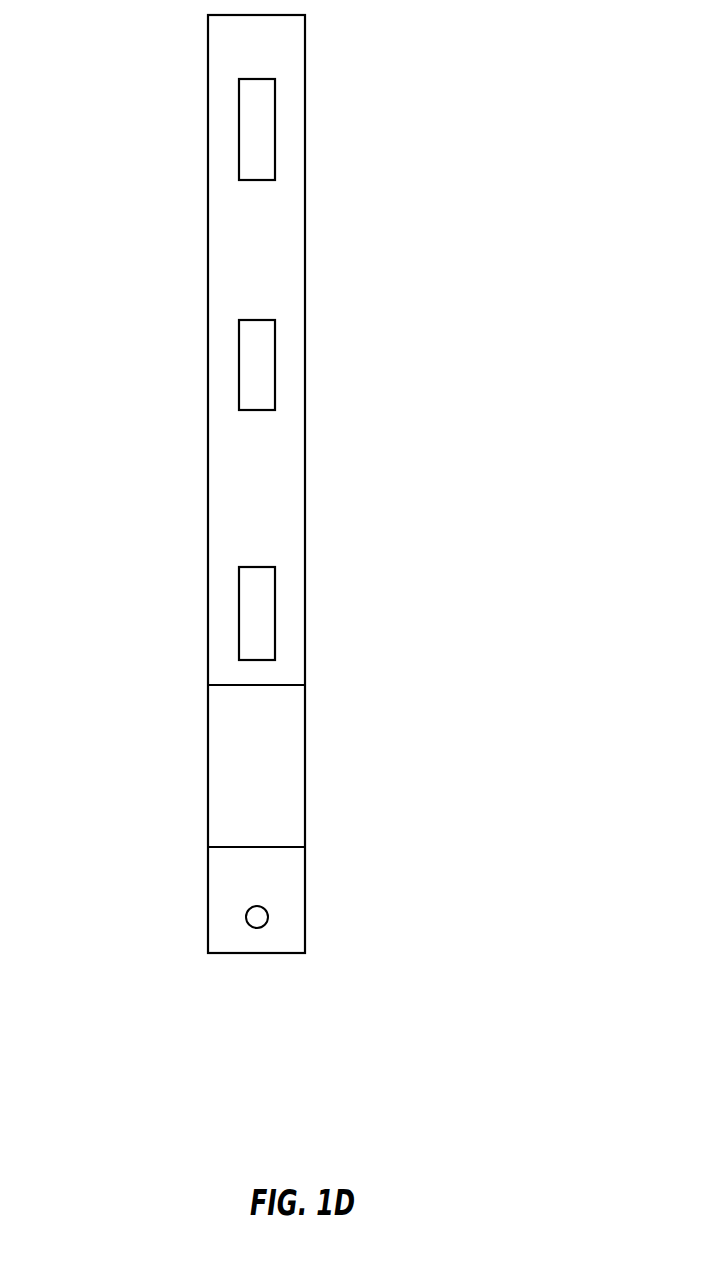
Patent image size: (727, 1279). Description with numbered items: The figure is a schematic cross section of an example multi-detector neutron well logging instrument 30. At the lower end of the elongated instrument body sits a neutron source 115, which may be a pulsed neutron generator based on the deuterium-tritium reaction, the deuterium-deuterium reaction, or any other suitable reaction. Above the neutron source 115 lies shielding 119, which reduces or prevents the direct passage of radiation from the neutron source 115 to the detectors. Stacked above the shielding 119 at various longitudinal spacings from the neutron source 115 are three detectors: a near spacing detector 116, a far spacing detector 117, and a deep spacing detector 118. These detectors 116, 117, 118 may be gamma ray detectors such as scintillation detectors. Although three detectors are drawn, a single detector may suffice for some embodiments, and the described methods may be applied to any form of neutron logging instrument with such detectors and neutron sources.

The neutron logging tool 30 is at (158, 240).
The deep spacing detector 118 is at (275, 120).
The far spacing detector 117 is at (275, 362).
The near spacing detector 116 is at (275, 600).
The shielding 119 is at (292, 753).
The neutron source 115 is at (268, 920).